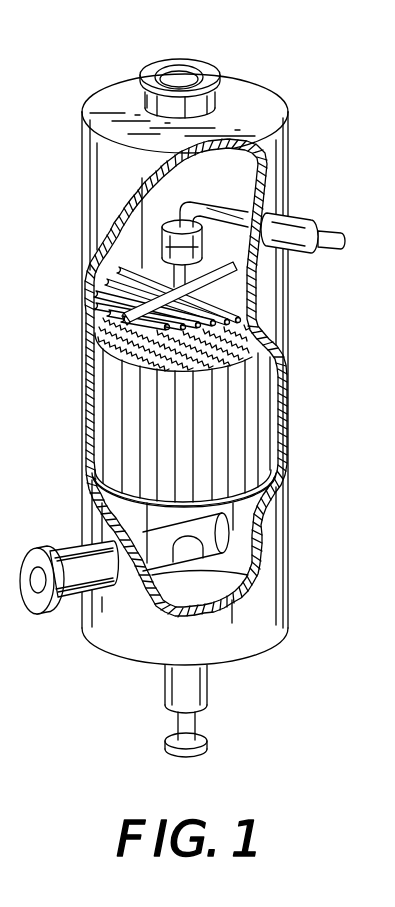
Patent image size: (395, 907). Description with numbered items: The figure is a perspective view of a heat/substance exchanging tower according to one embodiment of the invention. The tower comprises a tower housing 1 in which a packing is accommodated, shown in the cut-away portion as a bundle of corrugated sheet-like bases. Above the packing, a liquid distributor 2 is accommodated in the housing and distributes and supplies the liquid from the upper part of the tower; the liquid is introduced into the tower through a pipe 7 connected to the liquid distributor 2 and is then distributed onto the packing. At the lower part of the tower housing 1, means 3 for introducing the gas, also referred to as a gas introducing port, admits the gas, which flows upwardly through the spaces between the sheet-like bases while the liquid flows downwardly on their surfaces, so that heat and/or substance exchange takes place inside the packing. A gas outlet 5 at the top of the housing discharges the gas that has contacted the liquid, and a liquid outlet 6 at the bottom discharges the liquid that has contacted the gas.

The tower housing 1 is at (250, 102).
The liquid distributor 2 is at (95, 290).
The means for introducing the gas 3 is at (160, 571).
The gas outlet 5 is at (178, 72).
The liquid outlet 6 is at (197, 688).
The pipe 7 is at (228, 212).